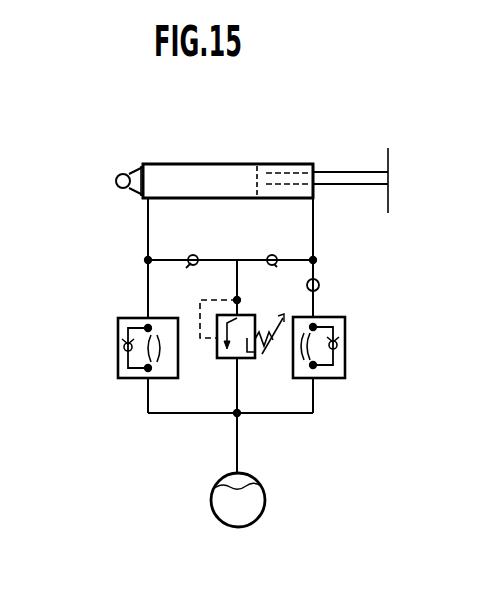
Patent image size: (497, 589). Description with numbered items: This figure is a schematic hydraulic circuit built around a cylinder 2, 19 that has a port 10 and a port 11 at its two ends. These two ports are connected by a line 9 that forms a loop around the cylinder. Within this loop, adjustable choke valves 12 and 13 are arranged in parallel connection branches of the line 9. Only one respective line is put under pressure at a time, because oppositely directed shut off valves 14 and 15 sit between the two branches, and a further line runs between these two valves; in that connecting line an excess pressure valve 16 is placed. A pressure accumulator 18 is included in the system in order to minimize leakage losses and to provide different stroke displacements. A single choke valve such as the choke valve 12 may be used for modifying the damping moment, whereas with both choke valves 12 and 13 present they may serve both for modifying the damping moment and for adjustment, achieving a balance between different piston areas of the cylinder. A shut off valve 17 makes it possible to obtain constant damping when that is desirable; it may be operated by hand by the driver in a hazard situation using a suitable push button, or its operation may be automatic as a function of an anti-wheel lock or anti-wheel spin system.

The cylinder 2 is at (175, 180).
The cylinder 19 is at (228, 181).
The line 9 is at (314, 241).
The port 10 is at (314, 199).
The port 11 is at (142, 198).
The adjustable choke valve 12 is at (340, 341).
The adjustable choke valve 13 is at (118, 331).
The shut off valve 14 is at (197, 256).
The shut off valve 15 is at (268, 256).
The excess pressure valve 16 is at (248, 350).
The shut off valve 17 is at (319, 285).
The pressure accumulator 18 is at (238, 512).